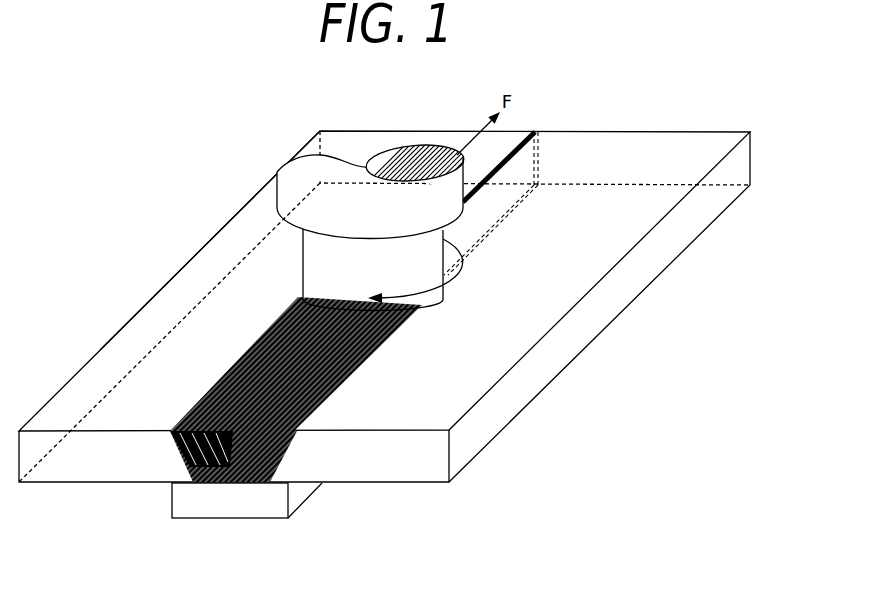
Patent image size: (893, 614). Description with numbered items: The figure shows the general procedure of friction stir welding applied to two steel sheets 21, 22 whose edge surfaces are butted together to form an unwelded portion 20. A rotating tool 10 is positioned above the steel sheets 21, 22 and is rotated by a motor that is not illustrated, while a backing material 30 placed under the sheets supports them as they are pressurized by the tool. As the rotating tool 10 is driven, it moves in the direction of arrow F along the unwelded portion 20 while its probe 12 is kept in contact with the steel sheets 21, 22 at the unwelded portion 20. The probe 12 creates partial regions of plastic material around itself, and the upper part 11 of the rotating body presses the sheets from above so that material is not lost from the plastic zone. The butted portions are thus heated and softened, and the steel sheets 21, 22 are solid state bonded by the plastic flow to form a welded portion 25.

The rotating tool 10 is at (358, 163).
The upper part of a rotating body 11 is at (322, 273).
The probe 12 is at (377, 353).
The unwelded portion 20 is at (535, 132).
The steel sheet 21 is at (154, 296).
The steel sheet 22 is at (610, 238).
The welded portion 25 is at (177, 458).
The backing material 30 is at (235, 505).